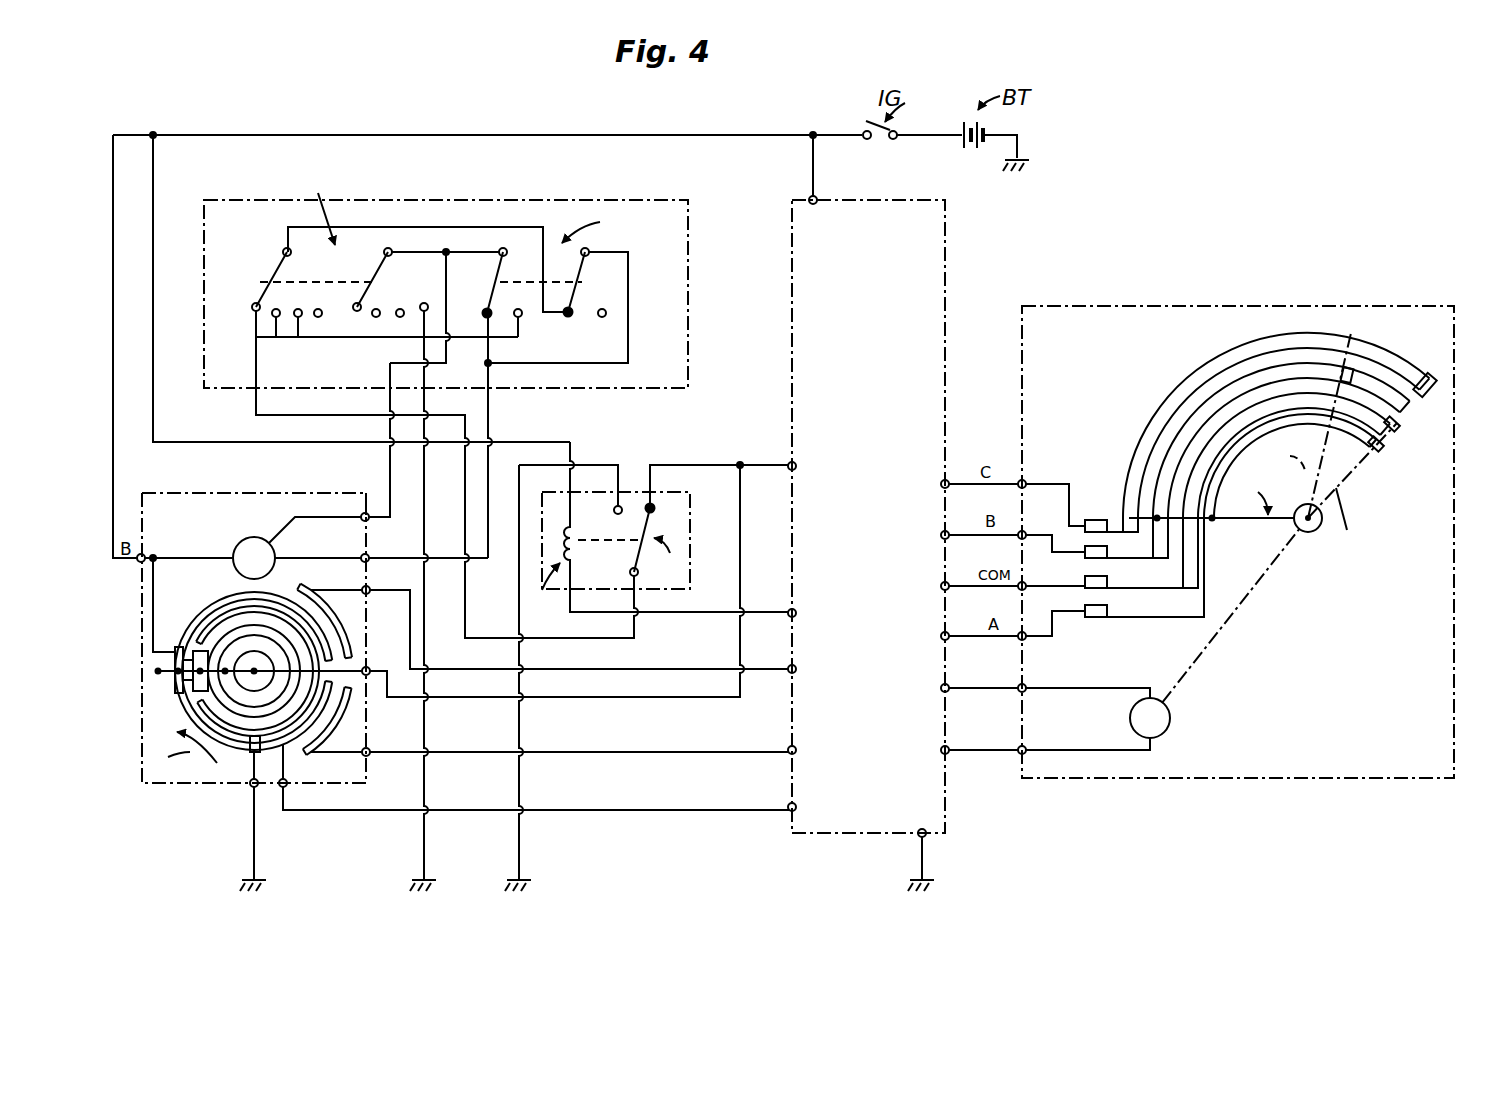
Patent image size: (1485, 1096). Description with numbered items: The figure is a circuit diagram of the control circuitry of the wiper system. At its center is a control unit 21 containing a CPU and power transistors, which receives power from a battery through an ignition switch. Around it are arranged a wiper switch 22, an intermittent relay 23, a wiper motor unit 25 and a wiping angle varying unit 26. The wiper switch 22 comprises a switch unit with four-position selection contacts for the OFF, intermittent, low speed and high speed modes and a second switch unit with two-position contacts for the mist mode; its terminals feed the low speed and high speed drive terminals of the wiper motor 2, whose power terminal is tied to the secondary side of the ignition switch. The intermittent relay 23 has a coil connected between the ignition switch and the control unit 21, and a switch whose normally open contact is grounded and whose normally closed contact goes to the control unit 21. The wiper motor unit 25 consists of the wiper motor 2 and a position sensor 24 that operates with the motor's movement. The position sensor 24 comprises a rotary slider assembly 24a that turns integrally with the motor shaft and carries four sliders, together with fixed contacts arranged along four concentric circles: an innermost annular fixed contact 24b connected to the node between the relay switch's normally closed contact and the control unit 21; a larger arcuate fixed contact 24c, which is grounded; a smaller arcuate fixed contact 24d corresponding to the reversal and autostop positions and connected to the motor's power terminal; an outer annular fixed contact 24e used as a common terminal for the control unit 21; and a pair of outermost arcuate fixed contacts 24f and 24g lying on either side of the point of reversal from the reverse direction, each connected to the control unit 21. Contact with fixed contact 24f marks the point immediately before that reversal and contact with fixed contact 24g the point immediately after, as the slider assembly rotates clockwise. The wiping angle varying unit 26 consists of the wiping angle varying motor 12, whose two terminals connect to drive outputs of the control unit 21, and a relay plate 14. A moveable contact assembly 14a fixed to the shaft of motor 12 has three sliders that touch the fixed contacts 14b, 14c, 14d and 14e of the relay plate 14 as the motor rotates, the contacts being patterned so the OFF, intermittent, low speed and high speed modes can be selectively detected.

The wiper motor 2 is at (249, 538).
The wiping angle varying motor 12 is at (1172, 718).
The relay plate 14 is at (1264, 471).
The moveable contact assembly 14a is at (1247, 522).
The fixed contact 14b is at (1345, 462).
The fixed contact 14c is at (1384, 440).
The fixed contact 14d is at (1375, 346).
The fixed contact 14e is at (1392, 413).
The control unit 21 is at (945, 283).
The wiper switch 22 is at (462, 200).
The intermittent relay 23 is at (633, 492).
The position sensor 24 is at (248, 692).
The rotary slider assembly 24a is at (193, 680).
The innermost annular fixed contact 24b is at (246, 637).
The larger arcuate fixed contact 24c is at (240, 733).
The smaller arcuate fixed contact 24d is at (203, 690).
The outer annular fixed contact 24e is at (177, 648).
The outermost arcuate fixed contact 24f is at (308, 588).
The outermost arcuate fixed contact 24g is at (350, 700).
The wiper motor unit 25 is at (248, 635).
The wiping angle varying unit 26 is at (1236, 520).